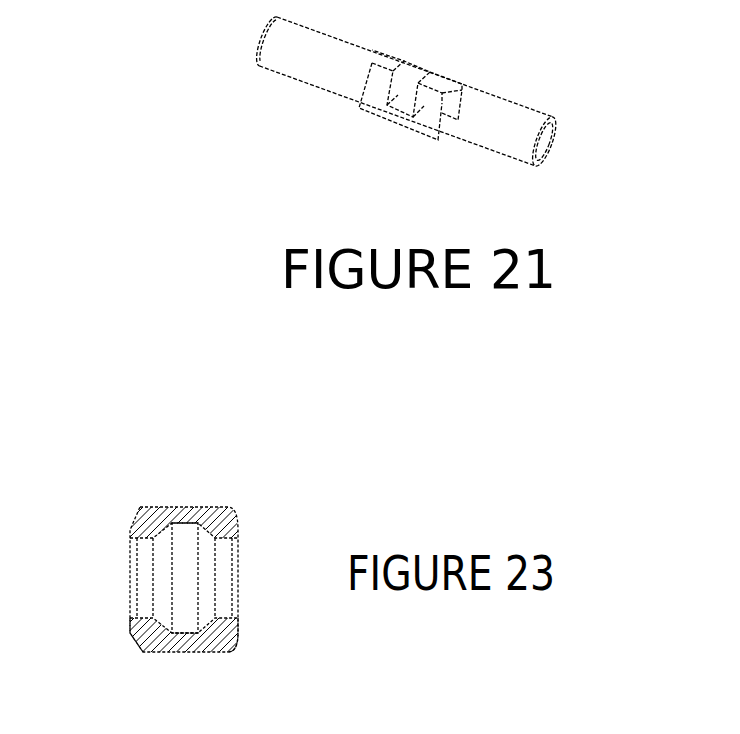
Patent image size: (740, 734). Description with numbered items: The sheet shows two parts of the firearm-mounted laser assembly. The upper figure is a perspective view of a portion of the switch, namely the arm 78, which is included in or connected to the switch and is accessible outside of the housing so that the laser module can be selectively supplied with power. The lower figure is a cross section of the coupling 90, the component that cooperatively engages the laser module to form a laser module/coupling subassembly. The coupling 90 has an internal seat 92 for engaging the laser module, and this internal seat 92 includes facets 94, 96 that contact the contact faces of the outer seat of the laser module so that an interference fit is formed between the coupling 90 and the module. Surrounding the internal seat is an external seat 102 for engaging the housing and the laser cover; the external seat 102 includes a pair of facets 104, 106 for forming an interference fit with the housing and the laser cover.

In FIG. 21, the arm 78 is at (538, 115).
In FIG. 23, the coupling 90 is at (168, 508).
In FIG. 23, the internal seat 92 is at (190, 512).
In FIG. 23, the facet 94 is at (208, 531).
In FIG. 23, the facet 96 is at (163, 533).
In FIG. 23, the external seat 102 is at (137, 656).
In FIG. 23, the facet 104 is at (237, 636).
In FIG. 23, the facet 106 is at (133, 640).